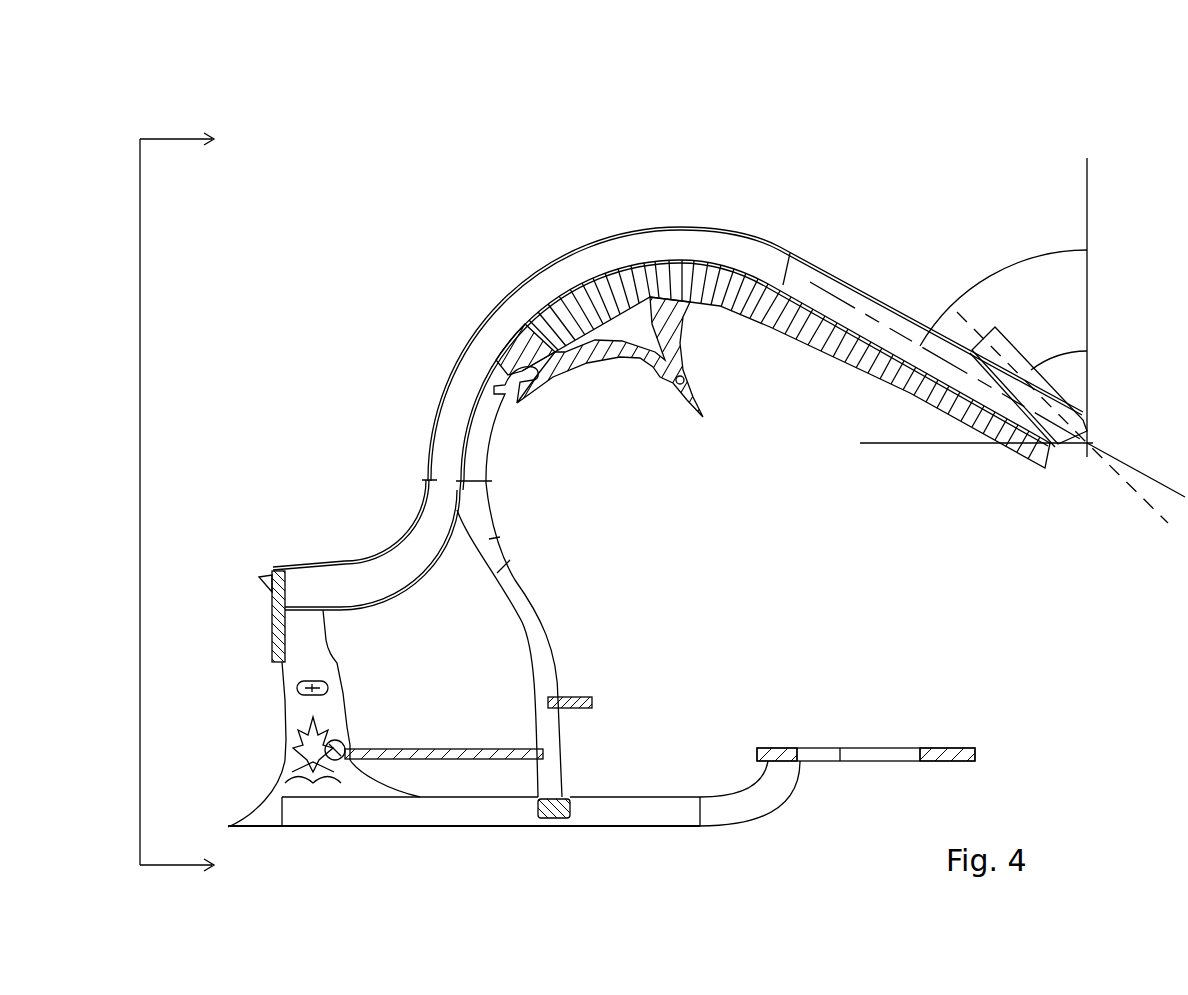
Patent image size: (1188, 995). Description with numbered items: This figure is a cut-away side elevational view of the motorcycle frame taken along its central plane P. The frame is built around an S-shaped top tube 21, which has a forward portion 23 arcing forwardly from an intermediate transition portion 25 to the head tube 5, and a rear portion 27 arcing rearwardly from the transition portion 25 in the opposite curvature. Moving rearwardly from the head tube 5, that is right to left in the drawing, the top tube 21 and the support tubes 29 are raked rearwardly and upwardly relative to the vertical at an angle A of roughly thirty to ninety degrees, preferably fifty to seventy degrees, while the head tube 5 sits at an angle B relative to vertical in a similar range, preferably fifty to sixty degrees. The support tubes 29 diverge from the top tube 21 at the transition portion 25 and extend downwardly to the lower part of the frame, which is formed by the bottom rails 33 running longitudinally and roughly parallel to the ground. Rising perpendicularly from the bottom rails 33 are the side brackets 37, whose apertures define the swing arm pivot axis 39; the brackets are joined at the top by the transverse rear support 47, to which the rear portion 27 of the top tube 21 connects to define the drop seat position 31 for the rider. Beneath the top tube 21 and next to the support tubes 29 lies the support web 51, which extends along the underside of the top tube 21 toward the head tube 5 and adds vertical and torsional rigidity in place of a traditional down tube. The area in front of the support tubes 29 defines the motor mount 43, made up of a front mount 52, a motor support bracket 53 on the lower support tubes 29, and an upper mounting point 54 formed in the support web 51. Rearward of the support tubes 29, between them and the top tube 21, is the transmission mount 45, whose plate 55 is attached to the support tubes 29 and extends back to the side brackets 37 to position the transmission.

The central plane P is at (172, 140).
The head tube 5 is at (1062, 380).
The top tube 21 is at (490, 313).
The forward portion 23 is at (810, 268).
The intermediate transition portion 25 is at (430, 448).
The rear portion 27 is at (380, 550).
The support tubes 29 is at (492, 541).
The drop seat position 31 is at (339, 531).
The bottom rails 33 is at (680, 813).
The side brackets 37 is at (290, 710).
The swing arm pivot axis 39 is at (297, 687).
The motor mount 43 is at (702, 684).
The transmission mount 45 is at (423, 704).
The transverse rear support 47 is at (270, 610).
The support web 51 is at (772, 296).
The front mount 52 is at (965, 748).
The motor support bracket 53 is at (592, 697).
The upper mounting point 54 is at (693, 372).
The plate 55 is at (458, 749).
The angle A is at (1020, 265).
The angle B is at (1050, 348).